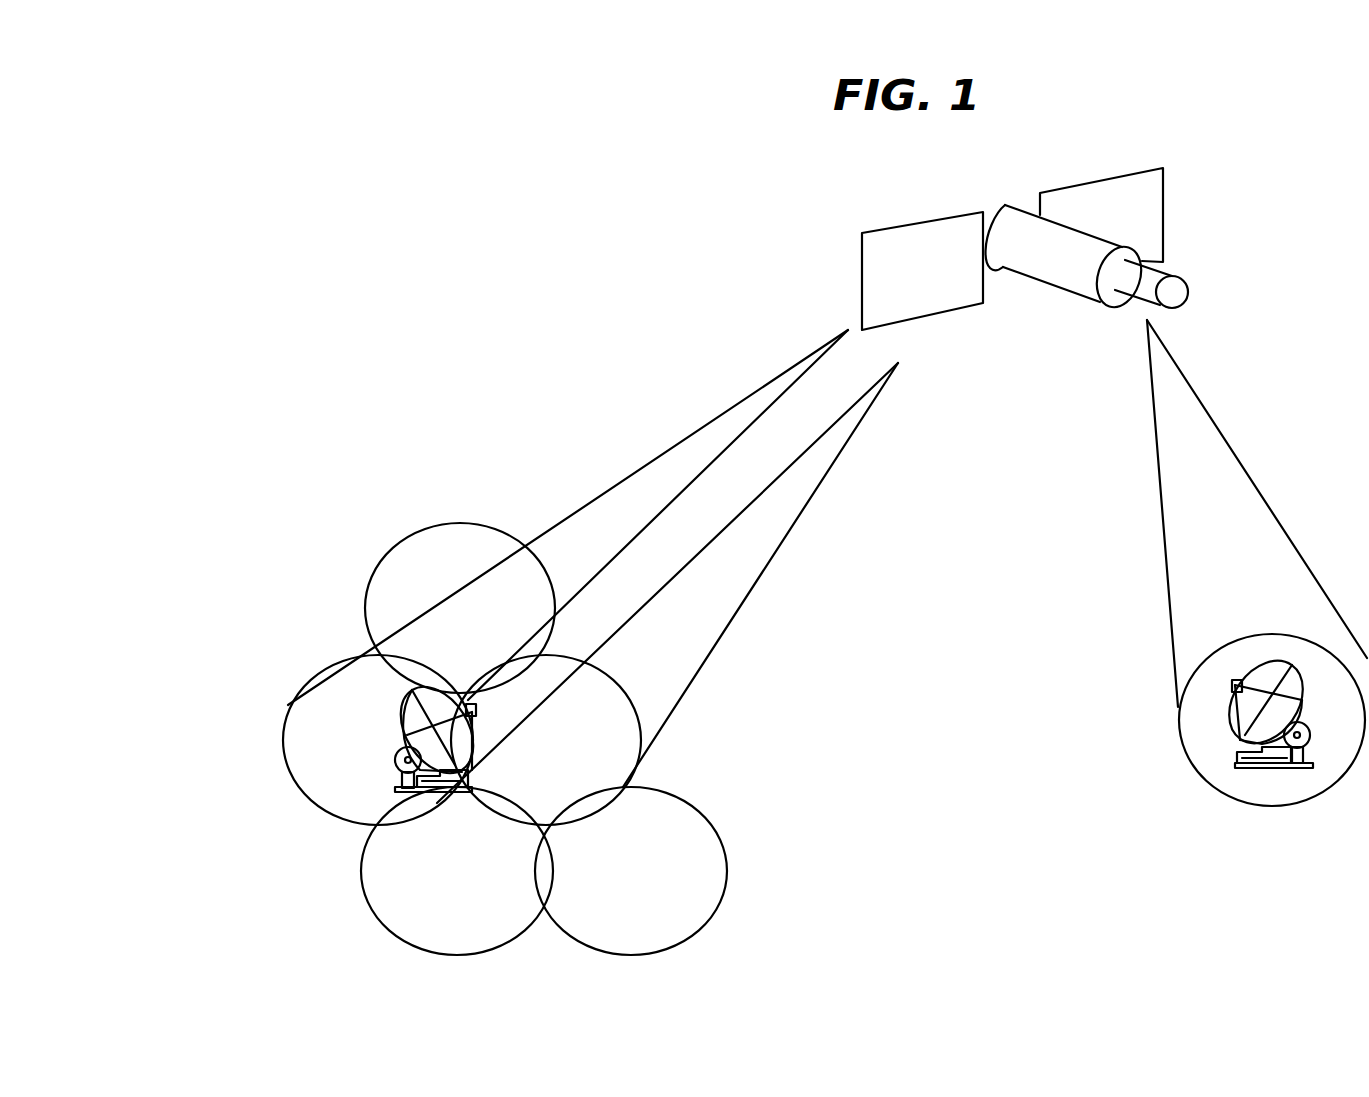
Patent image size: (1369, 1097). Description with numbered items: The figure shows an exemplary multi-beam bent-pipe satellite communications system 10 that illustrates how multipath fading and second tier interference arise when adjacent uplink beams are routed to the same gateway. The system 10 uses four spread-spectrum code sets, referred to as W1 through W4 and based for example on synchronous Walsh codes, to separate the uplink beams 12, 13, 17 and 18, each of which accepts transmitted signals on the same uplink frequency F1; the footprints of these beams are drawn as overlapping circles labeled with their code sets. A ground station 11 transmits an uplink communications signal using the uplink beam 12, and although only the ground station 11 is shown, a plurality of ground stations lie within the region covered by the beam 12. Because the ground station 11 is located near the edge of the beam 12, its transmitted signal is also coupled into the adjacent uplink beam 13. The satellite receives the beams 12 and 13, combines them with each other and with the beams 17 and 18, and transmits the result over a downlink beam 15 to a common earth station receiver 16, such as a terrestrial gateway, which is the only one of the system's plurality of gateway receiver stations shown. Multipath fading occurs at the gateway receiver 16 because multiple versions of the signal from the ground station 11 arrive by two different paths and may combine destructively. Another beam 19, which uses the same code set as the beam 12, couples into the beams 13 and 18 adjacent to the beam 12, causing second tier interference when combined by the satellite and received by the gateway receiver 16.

The multi-beam bent-pipe satellite communications system 10 is at (527, 324).
The ground station 11 is at (398, 774).
The uplink beam 12 is at (650, 484).
The adjacent uplink beam 13 is at (749, 567).
The downlink beam 15 is at (1250, 525).
The earth station receiver 16 is at (1305, 725).
The uplink beam 17 is at (365, 604).
The uplink beam 18 is at (362, 866).
The beam 19 is at (727, 868).